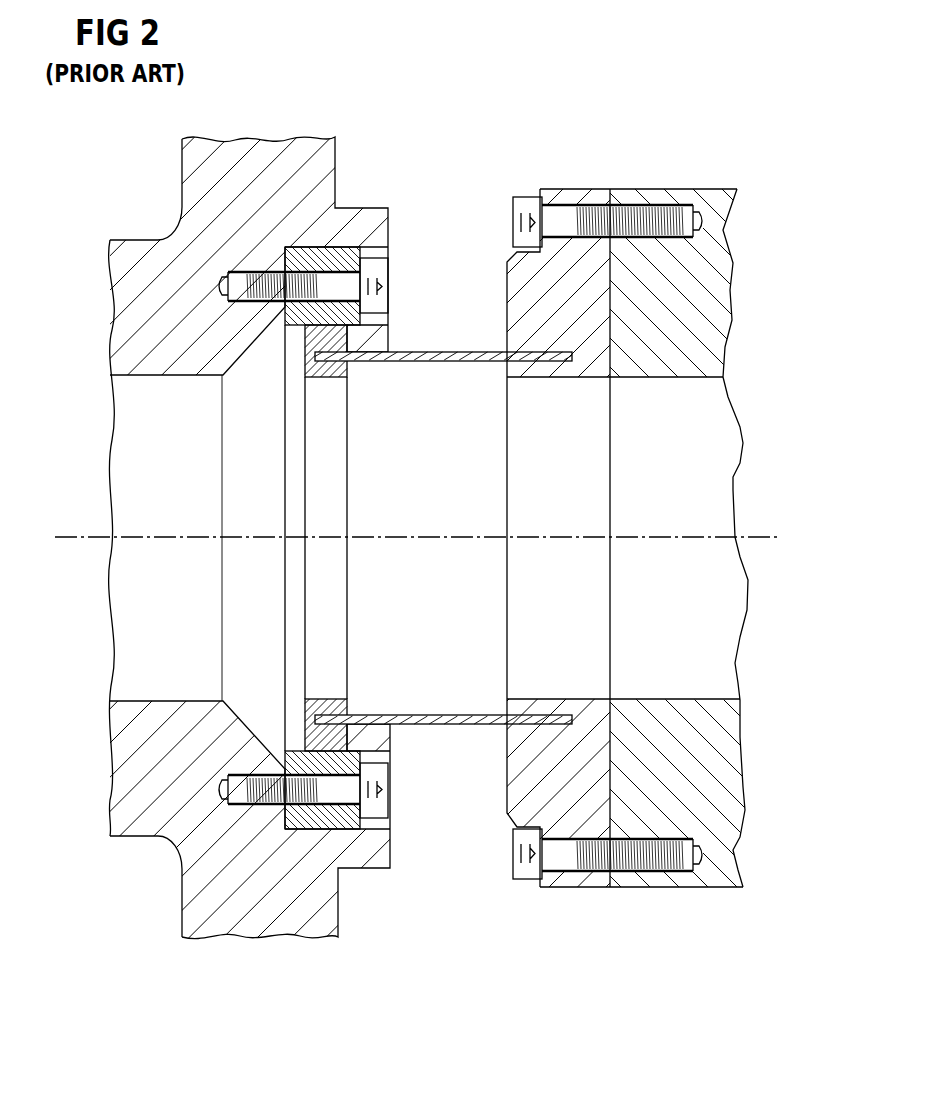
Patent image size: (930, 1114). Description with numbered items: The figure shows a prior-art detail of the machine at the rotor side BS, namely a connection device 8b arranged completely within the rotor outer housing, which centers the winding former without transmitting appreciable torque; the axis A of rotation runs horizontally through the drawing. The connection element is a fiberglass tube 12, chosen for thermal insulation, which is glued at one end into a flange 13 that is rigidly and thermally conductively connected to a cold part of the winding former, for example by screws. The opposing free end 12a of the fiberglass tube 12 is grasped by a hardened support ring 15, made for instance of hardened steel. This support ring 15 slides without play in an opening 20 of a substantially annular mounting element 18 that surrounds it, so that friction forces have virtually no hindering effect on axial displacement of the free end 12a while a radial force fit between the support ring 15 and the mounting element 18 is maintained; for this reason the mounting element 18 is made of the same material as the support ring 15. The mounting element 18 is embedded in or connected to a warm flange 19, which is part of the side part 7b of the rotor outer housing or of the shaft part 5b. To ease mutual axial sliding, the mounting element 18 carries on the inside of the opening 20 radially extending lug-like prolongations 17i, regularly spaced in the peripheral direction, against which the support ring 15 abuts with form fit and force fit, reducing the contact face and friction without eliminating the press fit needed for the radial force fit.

The side part 7b is at (192, 150).
The shaft part 5b is at (130, 812).
The connection device 8b is at (453, 923).
The rotor side BS is at (226, 98).
The mounting element 18 is at (335, 258).
The warm flange 19 is at (380, 232).
The lug-like prolongations 17i is at (385, 322).
The fiberglass tube 12 is at (475, 353).
The free end of the fiberglass tube 12a is at (328, 700).
The support ring 15 is at (345, 368).
The opening 20 is at (297, 445).
The flange 13 is at (610, 190).
The axis of rotation A is at (757, 538).